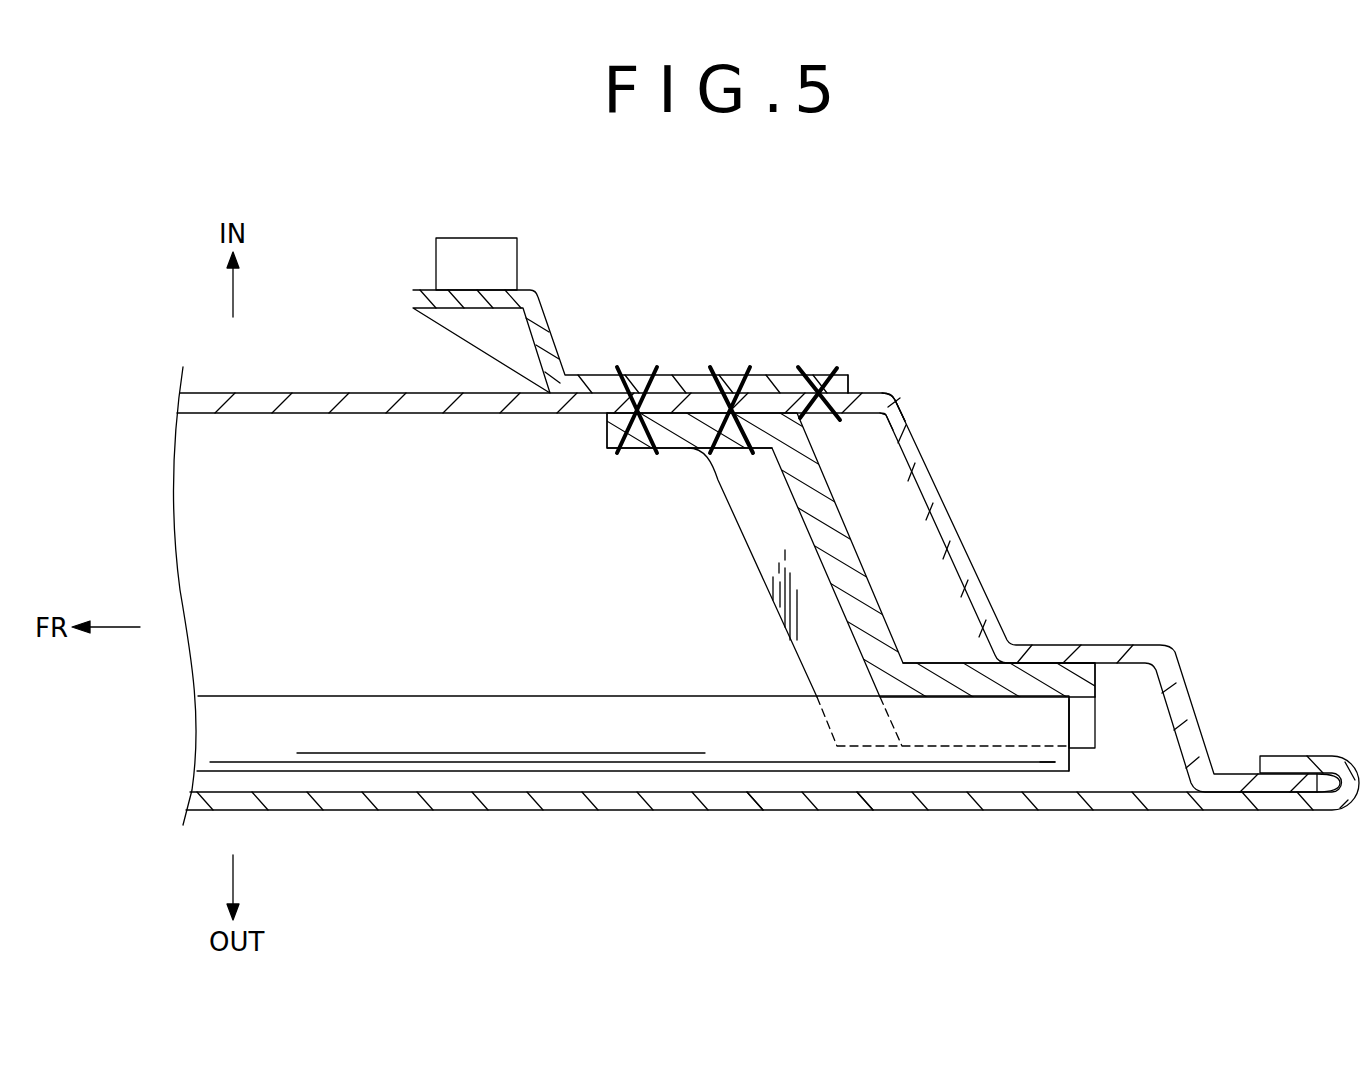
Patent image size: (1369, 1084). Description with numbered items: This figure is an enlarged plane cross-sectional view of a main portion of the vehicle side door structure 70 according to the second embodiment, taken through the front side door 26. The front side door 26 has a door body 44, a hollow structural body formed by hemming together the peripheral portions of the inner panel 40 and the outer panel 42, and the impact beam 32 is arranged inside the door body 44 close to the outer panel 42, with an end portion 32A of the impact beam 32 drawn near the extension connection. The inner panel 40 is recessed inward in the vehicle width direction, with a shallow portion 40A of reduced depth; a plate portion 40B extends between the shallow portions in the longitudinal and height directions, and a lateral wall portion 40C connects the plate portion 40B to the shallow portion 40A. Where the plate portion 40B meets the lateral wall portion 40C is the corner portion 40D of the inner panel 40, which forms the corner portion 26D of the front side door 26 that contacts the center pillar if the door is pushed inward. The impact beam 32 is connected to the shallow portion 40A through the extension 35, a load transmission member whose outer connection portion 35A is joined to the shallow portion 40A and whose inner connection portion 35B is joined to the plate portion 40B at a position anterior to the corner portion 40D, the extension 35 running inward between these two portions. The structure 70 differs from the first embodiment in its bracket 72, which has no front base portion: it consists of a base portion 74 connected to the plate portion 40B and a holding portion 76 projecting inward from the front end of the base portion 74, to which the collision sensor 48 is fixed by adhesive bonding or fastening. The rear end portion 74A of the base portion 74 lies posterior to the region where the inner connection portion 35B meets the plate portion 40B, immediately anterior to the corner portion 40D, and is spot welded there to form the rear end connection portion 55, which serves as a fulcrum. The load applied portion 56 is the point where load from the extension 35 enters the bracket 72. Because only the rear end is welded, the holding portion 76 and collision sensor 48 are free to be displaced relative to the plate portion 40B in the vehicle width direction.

The vehicle side door structure 70 is at (987, 213).
The collision sensor 48 is at (445, 238).
The bracket 72 is at (676, 294).
The holding portion 76 is at (530, 292).
The base portion 74 is at (598, 385).
The rear end portion 74A is at (842, 382).
The load applied portion 56 is at (697, 377).
The rear end connection portion 55 is at (823, 377).
The inner panel 40 is at (758, 553).
The plate portion 40B is at (266, 395).
The lateral wall portion 40C is at (948, 515).
The corner portion 40D is at (979, 392).
The corner portion 26D is at (895, 402).
The shallow portion 40A is at (1143, 645).
The extension 35 is at (835, 544).
The outer connection portion 35A is at (1022, 660).
The inner connection portion 35B is at (638, 435).
The impact beam 32 is at (633, 743).
The end portion of battery pack 32A is at (993, 730).
The outer panel 42 is at (848, 802).
The door body 44 is at (772, 841).
The front side door 26 is at (723, 825).